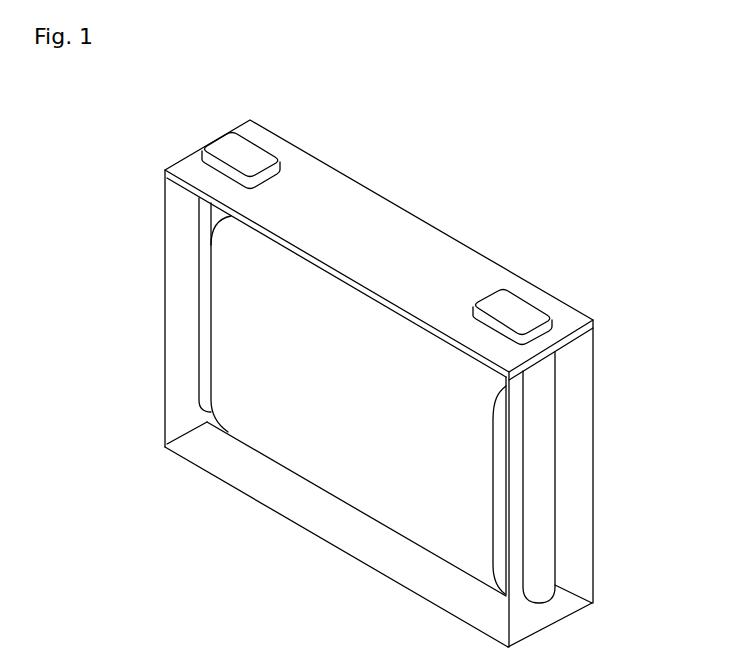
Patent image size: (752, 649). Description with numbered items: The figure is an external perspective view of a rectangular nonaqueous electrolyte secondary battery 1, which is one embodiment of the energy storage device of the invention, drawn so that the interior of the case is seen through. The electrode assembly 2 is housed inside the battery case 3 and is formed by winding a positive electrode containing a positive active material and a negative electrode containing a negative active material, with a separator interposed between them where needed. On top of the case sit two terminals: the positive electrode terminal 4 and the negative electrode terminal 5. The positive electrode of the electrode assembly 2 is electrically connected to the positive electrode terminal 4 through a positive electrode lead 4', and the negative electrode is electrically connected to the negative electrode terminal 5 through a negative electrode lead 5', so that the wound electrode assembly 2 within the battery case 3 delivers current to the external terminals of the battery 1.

The nonaqueous electrolyte secondary battery 1 is at (490, 208).
The electrode assembly 2 is at (345, 407).
The battery case 3 is at (163, 263).
The positive electrode terminal 4 is at (241, 131).
The negative electrode terminal 5 is at (512, 287).
The positive electrode lead 4' is at (168, 305).
The negative electrode lead 5' is at (576, 477).